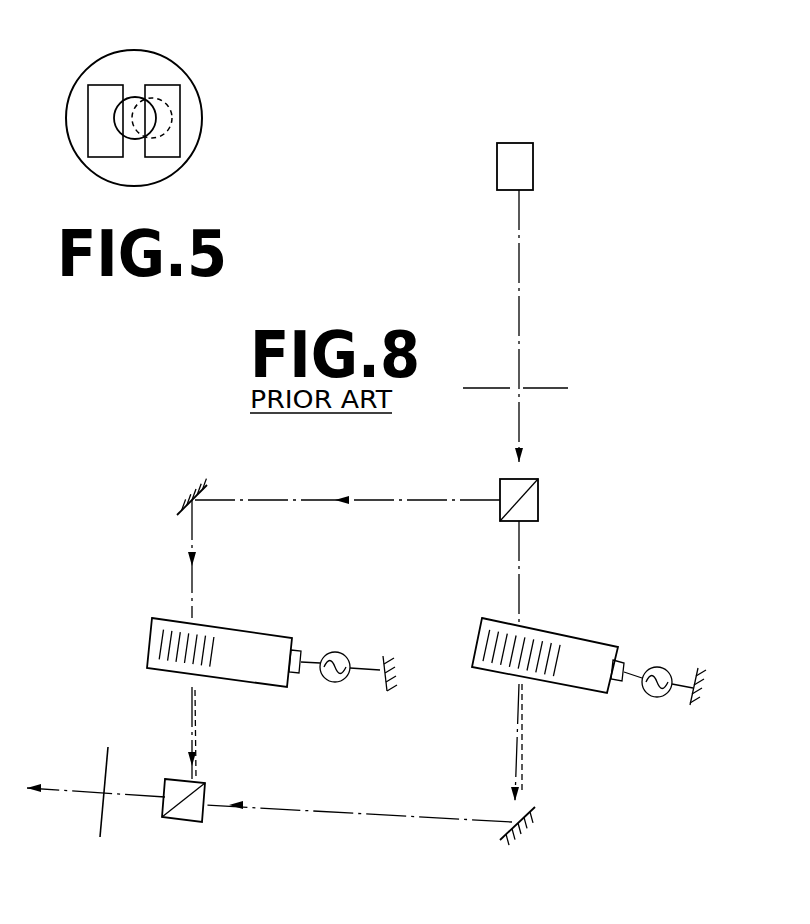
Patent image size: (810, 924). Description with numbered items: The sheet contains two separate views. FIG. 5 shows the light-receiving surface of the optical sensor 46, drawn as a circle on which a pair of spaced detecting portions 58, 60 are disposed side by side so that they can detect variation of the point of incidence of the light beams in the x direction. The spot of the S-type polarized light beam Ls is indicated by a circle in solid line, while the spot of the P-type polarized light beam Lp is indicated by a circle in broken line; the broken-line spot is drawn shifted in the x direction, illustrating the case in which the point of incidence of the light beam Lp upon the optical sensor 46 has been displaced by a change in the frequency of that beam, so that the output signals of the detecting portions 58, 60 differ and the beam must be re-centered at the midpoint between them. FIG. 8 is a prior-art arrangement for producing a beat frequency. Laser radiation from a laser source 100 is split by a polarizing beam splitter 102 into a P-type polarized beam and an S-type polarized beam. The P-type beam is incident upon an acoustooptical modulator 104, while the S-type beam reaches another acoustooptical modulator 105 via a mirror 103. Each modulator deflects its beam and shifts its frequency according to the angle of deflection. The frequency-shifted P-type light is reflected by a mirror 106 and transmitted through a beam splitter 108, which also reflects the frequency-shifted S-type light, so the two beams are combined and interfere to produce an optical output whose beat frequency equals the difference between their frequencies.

In FIG. 5, the optical sensor 46 is at (82, 75).
In FIG. 5, the detecting portion 58 is at (100, 143).
In FIG. 5, the detecting portion 60 is at (167, 143).
In FIG. 5, the S-type polarized light beam Ls is at (132, 96).
In FIG. 5, the P-type polarized light beam Lp is at (163, 102).
In FIG. 8, the laser source 100 is at (528, 178).
In FIG. 8, the polarizing beam splitter 102 is at (538, 505).
In FIG. 8, the mirror 103 is at (205, 490).
In FIG. 8, the acoustooptical modulator 104 is at (599, 632).
In FIG. 8, the acoustooptical modulator 105 is at (279, 625).
In FIG. 8, the mirror 106 is at (498, 838).
In FIG. 8, the beam splitter 108 is at (187, 813).